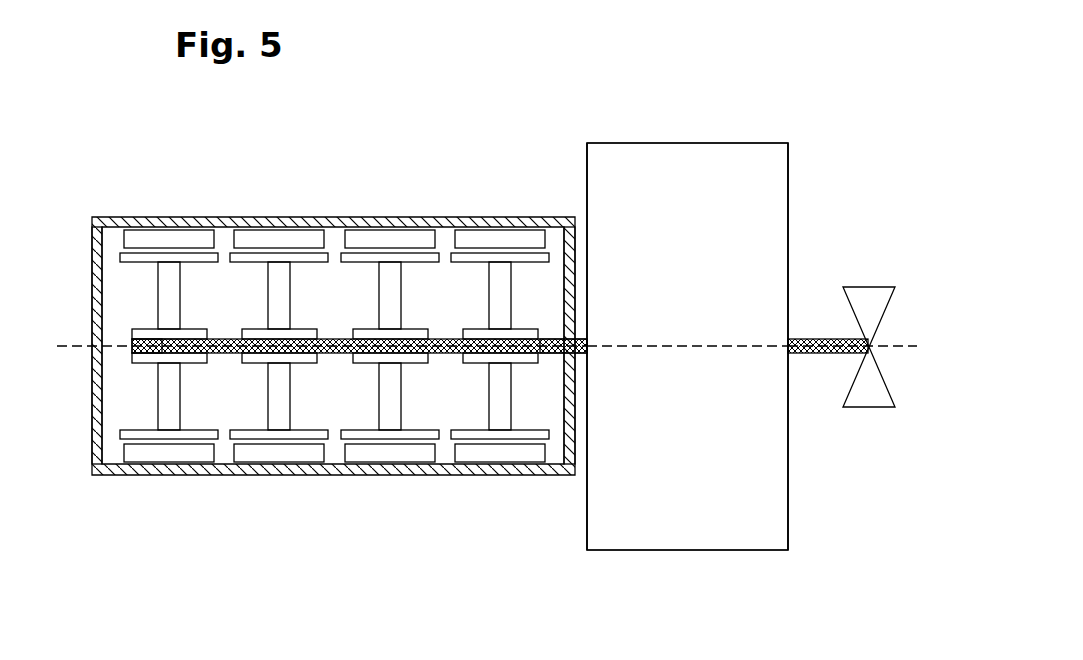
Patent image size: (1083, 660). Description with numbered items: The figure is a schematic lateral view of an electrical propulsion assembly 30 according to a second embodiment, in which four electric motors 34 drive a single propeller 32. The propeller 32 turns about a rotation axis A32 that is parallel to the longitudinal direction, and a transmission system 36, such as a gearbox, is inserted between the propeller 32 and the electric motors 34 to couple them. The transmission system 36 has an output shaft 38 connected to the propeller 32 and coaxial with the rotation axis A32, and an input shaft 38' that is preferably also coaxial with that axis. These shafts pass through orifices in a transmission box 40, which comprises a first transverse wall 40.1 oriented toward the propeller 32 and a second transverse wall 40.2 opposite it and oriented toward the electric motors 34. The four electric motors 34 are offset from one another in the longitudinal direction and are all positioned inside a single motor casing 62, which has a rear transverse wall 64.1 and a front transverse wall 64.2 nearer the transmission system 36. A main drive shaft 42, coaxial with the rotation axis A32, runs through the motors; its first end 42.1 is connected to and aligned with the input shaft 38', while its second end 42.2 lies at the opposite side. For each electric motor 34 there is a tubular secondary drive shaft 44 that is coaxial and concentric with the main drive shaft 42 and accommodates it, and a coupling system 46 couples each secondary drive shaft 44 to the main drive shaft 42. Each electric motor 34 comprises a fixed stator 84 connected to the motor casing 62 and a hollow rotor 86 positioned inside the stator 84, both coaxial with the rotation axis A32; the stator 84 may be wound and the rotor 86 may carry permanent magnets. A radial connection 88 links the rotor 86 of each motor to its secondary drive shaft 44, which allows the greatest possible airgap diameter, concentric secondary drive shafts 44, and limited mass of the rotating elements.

The electrical propulsion assembly 30 is at (131, 152).
The propeller 32 is at (866, 273).
The electric motor 34 is at (174, 196).
The transmission system 36 is at (725, 184).
The output shaft 38 is at (821, 305).
The input shaft 38' is at (687, 226).
The transmission box 40 is at (650, 143).
The first transverse wall 40.1 is at (788, 178).
The second transverse wall 40.2 is at (587, 167).
The main drive shaft 42 is at (142, 313).
The first end 42.1 is at (578, 335).
The second end 42.2 is at (132, 352).
The secondary drive shaft 44 is at (123, 320).
The coupling system 46 is at (119, 334).
The motor casing 62 is at (107, 203).
The rear transverse wall 64.1 is at (97, 282).
The front transverse wall 64.2 is at (570, 426).
The stator 84 is at (238, 454).
The rotor 86 is at (143, 433).
The radial connection 88 is at (280, 393).
The rotation axis A32 is at (895, 346).